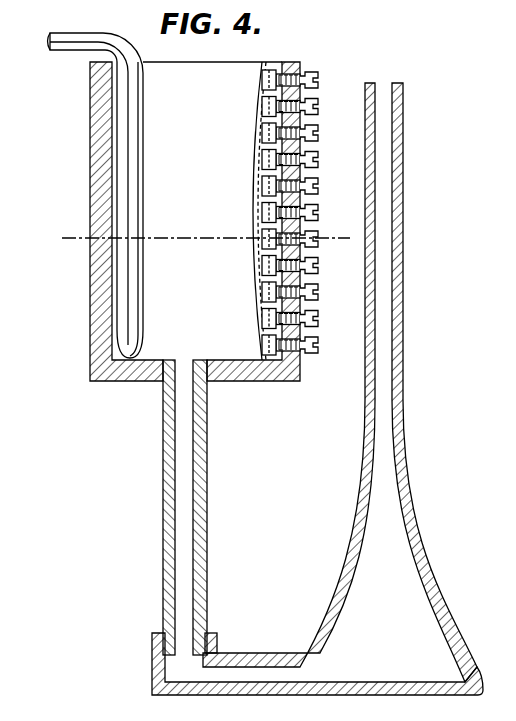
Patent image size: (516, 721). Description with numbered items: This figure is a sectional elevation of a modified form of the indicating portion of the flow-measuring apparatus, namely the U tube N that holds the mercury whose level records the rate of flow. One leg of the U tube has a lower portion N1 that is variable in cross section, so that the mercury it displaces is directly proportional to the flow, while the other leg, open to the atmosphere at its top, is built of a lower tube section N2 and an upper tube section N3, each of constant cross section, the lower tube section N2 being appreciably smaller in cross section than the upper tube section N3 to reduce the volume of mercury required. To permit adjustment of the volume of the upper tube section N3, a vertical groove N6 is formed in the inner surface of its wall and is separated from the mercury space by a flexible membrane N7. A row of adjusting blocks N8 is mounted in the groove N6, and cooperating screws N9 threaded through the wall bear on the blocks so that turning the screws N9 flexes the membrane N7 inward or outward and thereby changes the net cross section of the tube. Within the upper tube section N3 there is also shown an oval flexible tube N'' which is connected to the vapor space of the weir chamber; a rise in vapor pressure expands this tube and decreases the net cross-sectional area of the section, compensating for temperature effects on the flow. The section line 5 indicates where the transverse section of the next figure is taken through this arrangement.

The U tube N is at (289, 375).
The lower portion of the U tube N1 is at (421, 604).
The lower tube section N2 is at (159, 507).
The upper tube section N3 is at (91, 190).
The flexible tube N'' is at (116, 195).
The vertical groove N6 is at (275, 69).
The flexible membrane N7 is at (254, 112).
The adjusting blocks N8 is at (256, 158).
The screws N9 is at (318, 88).
The section line 5— 5 is at (347, 249).